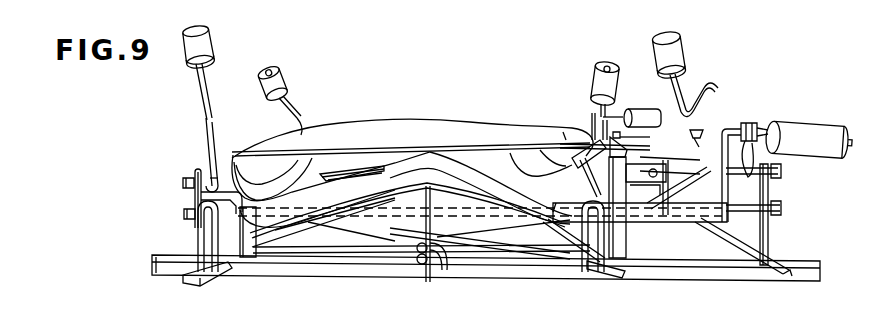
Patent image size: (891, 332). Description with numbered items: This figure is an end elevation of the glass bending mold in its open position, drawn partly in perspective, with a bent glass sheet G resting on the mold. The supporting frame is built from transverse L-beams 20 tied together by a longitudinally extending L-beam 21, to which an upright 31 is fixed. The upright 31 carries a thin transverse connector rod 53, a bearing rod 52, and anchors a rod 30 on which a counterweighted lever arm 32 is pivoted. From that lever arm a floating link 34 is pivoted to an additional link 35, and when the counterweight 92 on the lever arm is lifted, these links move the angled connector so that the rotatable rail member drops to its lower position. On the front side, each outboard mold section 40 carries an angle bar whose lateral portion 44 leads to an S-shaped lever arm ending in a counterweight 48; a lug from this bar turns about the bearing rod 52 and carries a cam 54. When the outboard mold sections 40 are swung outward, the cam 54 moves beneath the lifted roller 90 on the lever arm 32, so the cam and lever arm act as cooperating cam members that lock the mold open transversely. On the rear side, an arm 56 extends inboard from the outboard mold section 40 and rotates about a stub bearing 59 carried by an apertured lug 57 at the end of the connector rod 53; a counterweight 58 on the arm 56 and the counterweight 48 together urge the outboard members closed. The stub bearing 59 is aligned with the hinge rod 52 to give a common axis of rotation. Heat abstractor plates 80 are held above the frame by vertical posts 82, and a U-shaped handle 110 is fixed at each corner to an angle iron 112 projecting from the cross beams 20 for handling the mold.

The L-beam 20 is at (320, 269).
The longitudinally extending L-beam 21 is at (738, 247).
The rod 30 is at (697, 222).
The upright 31 is at (769, 245).
The counterweighted lever arm 32 is at (655, 230).
The floating link 34 is at (634, 240).
The additional link 35 is at (638, 170).
The outboard mold section 40 is at (500, 191).
The lateral portion 44 is at (677, 222).
The counterweight 48 is at (594, 84).
The bearing rod 52 is at (781, 178).
The transverse connector rod 53 is at (184, 214).
The cam 54 is at (757, 158).
The arm 56 is at (208, 160).
The apertured lug 57 is at (195, 193).
The counterweight 58 is at (263, 66).
The stub bearing 59 is at (182, 182).
The heat abstractor plate 80 is at (371, 166).
The vertical post 82 is at (447, 253).
The roller 90 is at (745, 124).
The counterweight 92 is at (645, 110).
The handle 110 is at (198, 240).
The angle iron 112 is at (210, 280).
The gunstock G is at (352, 123).